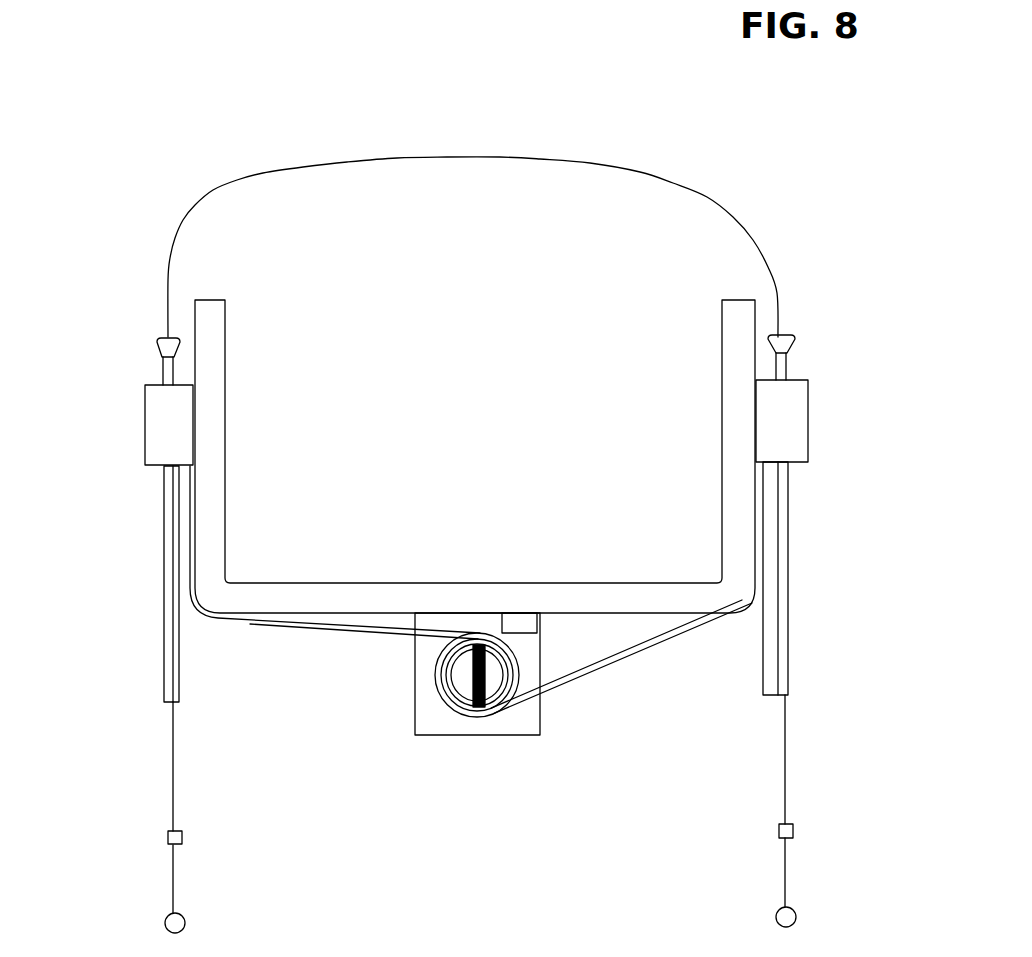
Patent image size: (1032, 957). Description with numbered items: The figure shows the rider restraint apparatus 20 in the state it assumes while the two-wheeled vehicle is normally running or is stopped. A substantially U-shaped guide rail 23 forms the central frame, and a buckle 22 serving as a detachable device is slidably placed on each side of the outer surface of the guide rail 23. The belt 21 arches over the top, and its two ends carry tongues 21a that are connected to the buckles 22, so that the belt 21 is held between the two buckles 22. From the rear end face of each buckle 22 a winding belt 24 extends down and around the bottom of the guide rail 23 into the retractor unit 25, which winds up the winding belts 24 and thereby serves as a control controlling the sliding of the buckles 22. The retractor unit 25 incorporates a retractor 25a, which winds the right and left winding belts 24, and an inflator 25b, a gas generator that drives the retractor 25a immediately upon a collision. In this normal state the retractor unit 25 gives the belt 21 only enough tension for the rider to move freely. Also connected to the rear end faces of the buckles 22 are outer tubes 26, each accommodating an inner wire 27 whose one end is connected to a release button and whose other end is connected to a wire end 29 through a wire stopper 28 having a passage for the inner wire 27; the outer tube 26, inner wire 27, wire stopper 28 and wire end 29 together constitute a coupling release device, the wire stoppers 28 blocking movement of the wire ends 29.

The rider restraint apparatus 20 is at (772, 172).
The belt 21 is at (517, 156).
The tongue 21a is at (162, 370).
The buckle 22 is at (145, 425).
The guide rail 23 is at (227, 382).
The winding belt 24 is at (312, 632).
The retractor unit 25 is at (428, 735).
The retractor 25a is at (502, 700).
The inflator 25b is at (519, 622).
The outer tube 26 is at (165, 582).
The inner wire 27 is at (173, 775).
The wire stopper 28 is at (167, 838).
The wire end 29 is at (165, 923).